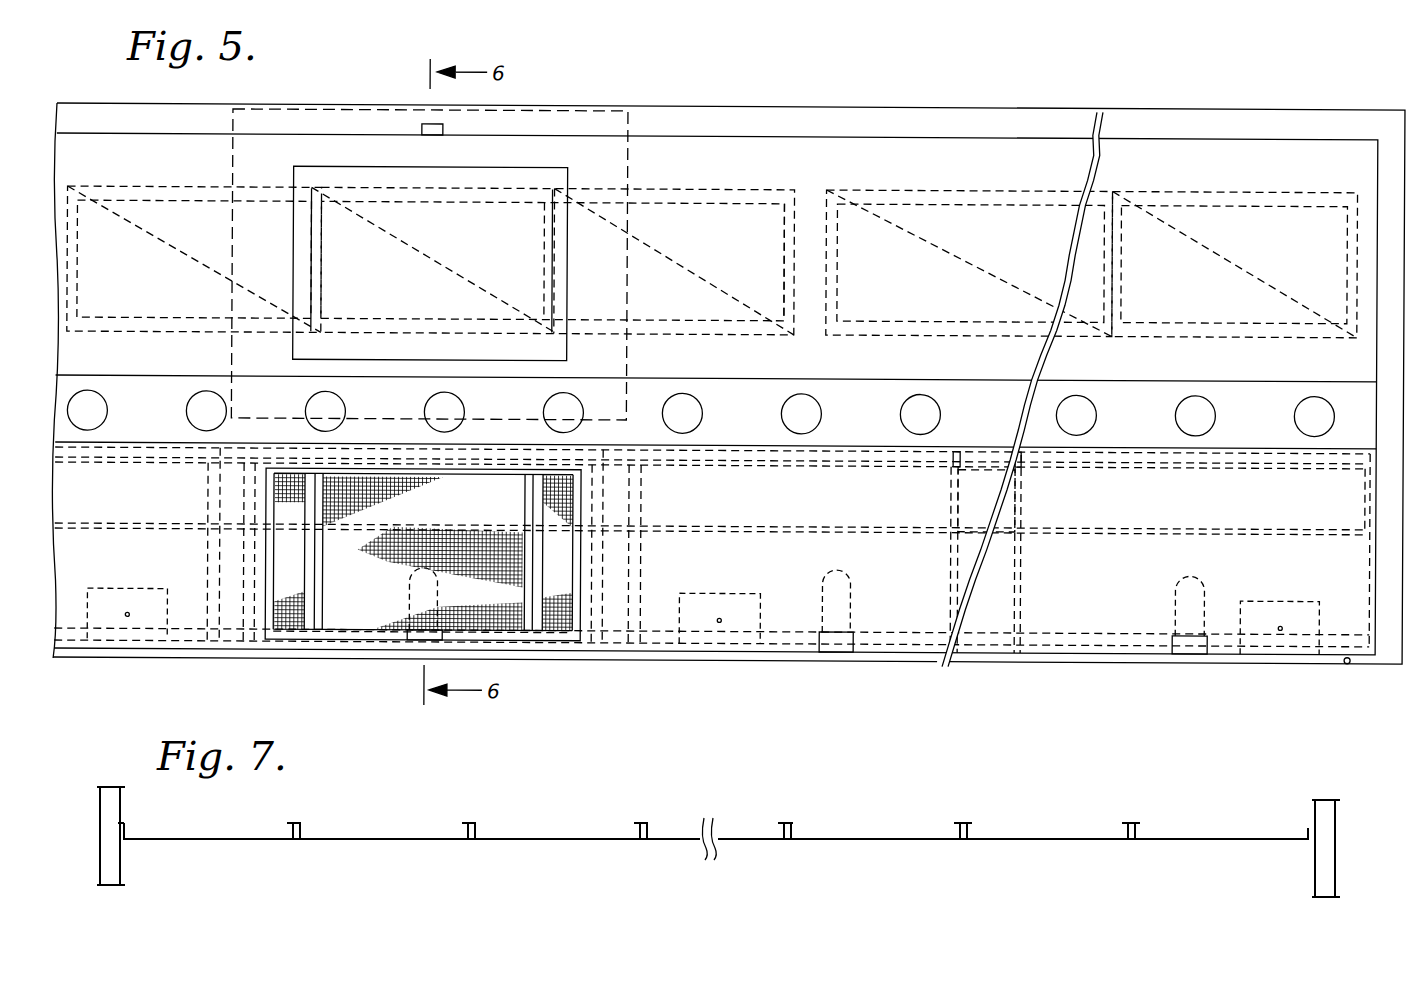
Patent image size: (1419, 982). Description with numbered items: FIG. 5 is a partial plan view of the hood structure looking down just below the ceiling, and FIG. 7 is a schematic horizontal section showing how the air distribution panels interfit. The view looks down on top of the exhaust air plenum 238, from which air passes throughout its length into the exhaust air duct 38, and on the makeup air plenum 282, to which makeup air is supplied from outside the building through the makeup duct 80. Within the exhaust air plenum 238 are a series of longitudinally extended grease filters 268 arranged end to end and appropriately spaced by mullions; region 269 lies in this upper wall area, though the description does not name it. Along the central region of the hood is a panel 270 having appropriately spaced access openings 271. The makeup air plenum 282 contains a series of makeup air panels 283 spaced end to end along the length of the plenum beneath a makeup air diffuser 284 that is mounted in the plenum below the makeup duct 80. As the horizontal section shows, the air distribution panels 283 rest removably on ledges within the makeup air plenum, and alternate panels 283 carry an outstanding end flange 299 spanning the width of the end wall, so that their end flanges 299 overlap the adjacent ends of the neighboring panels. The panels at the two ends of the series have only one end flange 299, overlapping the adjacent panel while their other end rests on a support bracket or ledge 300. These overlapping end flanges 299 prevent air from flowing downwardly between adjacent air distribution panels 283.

In FIG. 5, the exhaust air duct 38 is at (296, 264).
In FIG. 5, the makeup duct 80 is at (284, 564).
In FIG. 5, the exhaust air plenum 238 is at (918, 152).
In FIG. 5, the grease filters 268 is at (155, 186).
In FIG. 5, the upper wall section 269 is at (808, 195).
In FIG. 5, the panel 270 is at (855, 415).
In FIG. 5, the access openings 271 is at (790, 396).
In FIG. 5, the makeup air plenum 282 is at (905, 612).
In FIG. 5, the makeup air panels 283 is at (797, 625).
In FIG. 7, the makeup air panels 283 is at (565, 841).
In FIG. 5, the makeup air diffuser 284 is at (362, 622).
In FIG. 7, the end flange 299 is at (637, 822).
In FIG. 7, the support bracket or ledge 300 is at (124, 843).